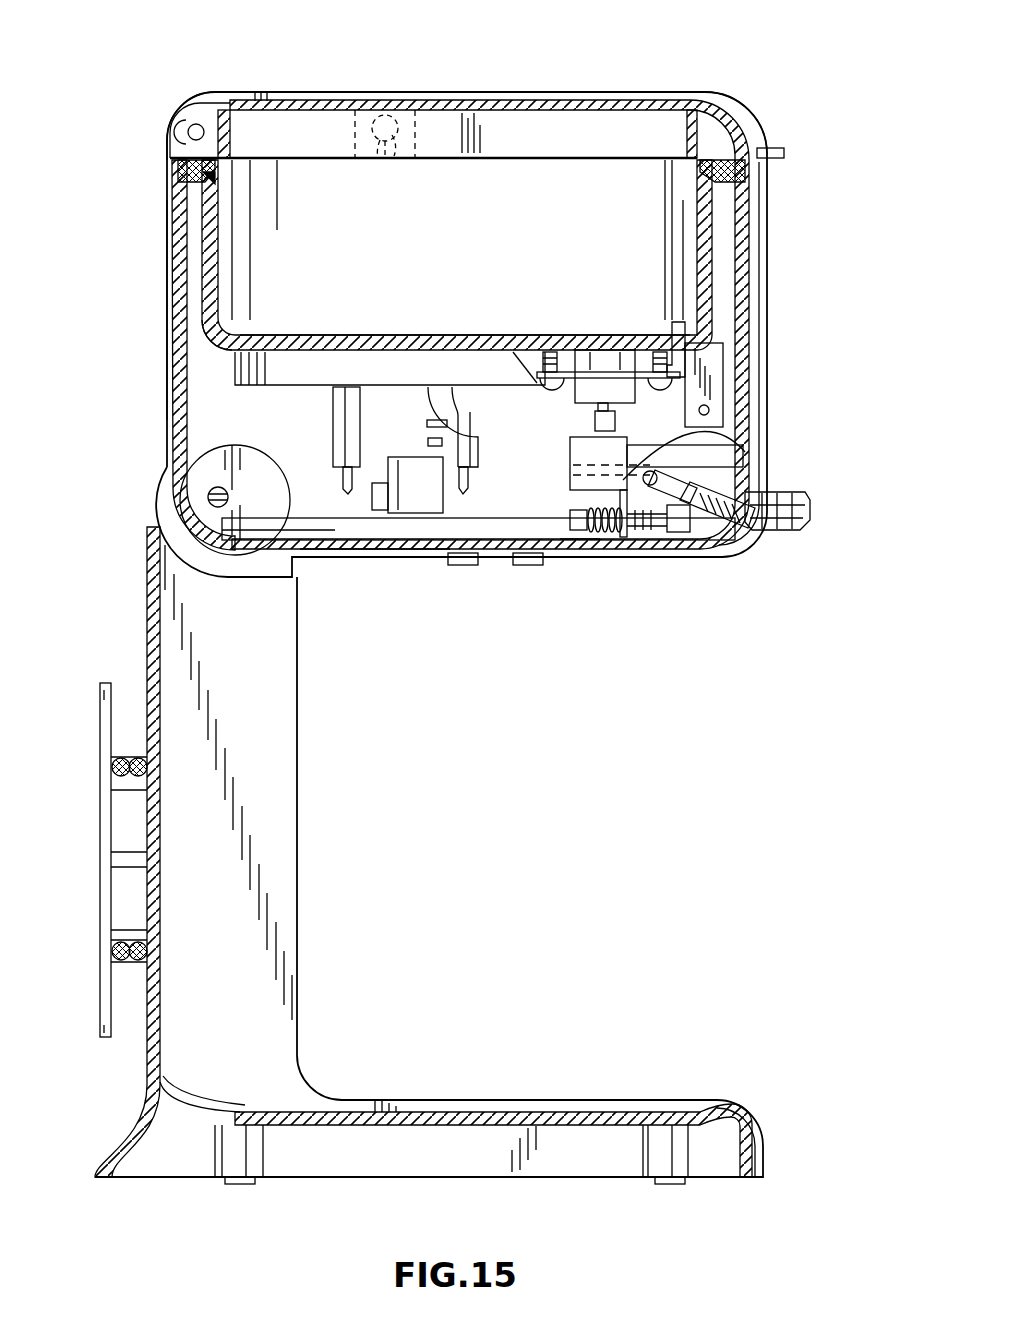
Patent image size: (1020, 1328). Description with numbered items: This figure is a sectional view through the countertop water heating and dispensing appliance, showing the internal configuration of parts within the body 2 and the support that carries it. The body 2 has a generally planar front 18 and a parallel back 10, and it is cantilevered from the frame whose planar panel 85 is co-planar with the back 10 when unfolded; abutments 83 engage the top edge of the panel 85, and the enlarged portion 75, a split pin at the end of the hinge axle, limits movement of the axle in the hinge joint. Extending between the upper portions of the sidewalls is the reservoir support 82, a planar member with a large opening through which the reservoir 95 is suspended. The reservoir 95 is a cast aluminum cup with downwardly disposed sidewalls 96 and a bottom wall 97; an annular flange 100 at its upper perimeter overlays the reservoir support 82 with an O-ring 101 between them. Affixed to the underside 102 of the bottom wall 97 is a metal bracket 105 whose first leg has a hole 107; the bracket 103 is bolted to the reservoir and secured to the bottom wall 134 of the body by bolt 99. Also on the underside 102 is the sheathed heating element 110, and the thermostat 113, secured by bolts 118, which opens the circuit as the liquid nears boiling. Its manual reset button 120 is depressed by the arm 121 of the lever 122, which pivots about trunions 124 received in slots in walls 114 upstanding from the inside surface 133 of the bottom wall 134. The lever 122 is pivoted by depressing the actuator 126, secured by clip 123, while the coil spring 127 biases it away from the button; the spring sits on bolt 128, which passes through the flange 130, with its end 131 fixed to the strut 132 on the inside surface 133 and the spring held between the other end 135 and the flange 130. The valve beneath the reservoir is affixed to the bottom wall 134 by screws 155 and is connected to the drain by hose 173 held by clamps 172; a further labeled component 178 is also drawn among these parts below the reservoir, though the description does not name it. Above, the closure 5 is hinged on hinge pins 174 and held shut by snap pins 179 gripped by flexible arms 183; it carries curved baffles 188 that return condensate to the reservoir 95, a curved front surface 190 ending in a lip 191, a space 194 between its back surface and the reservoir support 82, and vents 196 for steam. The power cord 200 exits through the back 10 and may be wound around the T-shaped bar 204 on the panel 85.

The body 2 is at (775, 258).
The closure 5 is at (590, 92).
The back 10 is at (168, 312).
The front 18 is at (770, 300).
The enlarged portion 75 is at (226, 494).
The reservoir support 82 is at (182, 195).
The abutments 83 is at (160, 520).
The planar panel 85 is at (148, 556).
The reservoir 95 is at (205, 348).
The sidewalls 96 is at (218, 270).
The bottom wall 97 is at (362, 333).
The bolt 99 is at (527, 566).
The flange 100 is at (213, 166).
The O-ring 101 is at (215, 176).
The underside 102 is at (297, 352).
The bracket 103 is at (525, 388).
The metal bracket 105 is at (718, 364).
The hole 107 is at (706, 411).
The sheathed heating element 110 is at (443, 405).
The thermostat 113 is at (599, 380).
The walls 114 is at (663, 550).
The bolts 118 is at (677, 383).
The manual reset button 120 is at (618, 420).
The arm 121 is at (590, 447).
The lever 122 is at (746, 468).
The clip 123 is at (790, 496).
The trunions 124 is at (742, 455).
The actuator 126 is at (810, 504).
The coil spring 127 is at (589, 553).
The bolt 128 is at (637, 550).
The flange 130 is at (620, 550).
The end 131 is at (676, 521).
The strut 132 is at (716, 540).
The inside surface 133 is at (348, 540).
The bottom wall 134 is at (380, 553).
The other end 135 is at (576, 553).
The screws 155 is at (462, 566).
The clamps 172 is at (428, 424).
The hose 173 is at (428, 442).
The hinge pins 174 is at (188, 128).
The control unit 178 is at (402, 498).
The snap pins 179 is at (392, 158).
The flexible arms 183 is at (380, 158).
The baffles 188 is at (232, 134).
The curved front surface 190 is at (752, 112).
The lip 191 is at (784, 152).
The space 194 is at (170, 152).
The vents 196 is at (196, 124).
The power cord 200 is at (120, 760).
The T-shaped bar 204 is at (100, 690).